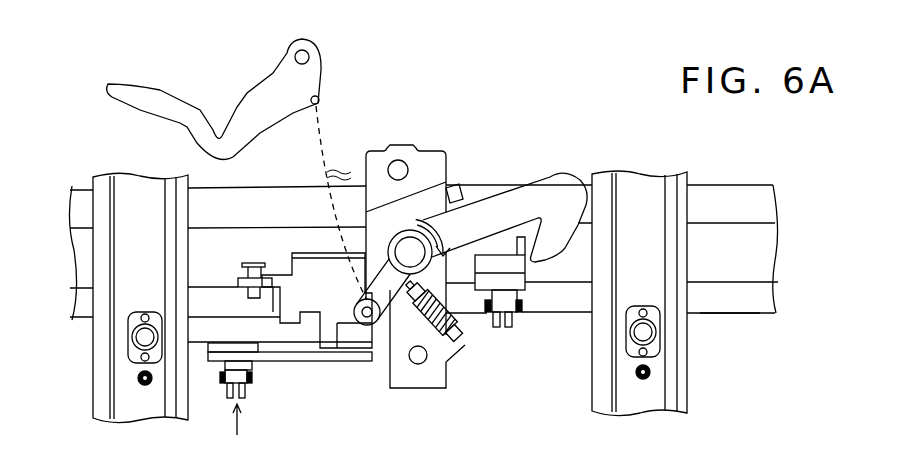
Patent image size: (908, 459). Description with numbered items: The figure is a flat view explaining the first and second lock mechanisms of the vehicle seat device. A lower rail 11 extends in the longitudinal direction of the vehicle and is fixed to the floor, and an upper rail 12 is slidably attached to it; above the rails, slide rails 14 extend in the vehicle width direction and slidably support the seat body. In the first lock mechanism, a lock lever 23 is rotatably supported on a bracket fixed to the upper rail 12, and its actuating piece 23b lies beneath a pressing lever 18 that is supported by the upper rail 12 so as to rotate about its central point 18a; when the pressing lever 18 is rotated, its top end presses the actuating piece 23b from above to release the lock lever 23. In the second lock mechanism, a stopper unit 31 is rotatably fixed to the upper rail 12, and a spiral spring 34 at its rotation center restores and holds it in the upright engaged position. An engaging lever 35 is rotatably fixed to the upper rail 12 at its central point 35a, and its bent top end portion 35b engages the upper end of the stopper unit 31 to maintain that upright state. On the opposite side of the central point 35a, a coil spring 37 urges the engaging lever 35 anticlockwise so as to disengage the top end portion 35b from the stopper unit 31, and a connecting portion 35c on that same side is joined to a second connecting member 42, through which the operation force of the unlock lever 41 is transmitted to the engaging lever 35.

The lower rail 11 is at (745, 315).
The upper rail 12 is at (762, 223).
The slide rail 14 is at (91, 176).
The pressing lever 18 is at (276, 368).
The central point 18a is at (238, 430).
The lock lever 23 is at (290, 262).
The actuating piece 23b is at (320, 330).
The stopper unit 31 is at (470, 262).
The spiral spring 34 is at (520, 312).
The engaging lever 35 is at (527, 180).
The central point 35a is at (385, 265).
The top end portion 35b is at (567, 238).
The connecting portion 35c is at (375, 327).
The coil spring 37 is at (460, 322).
The unlock lever 41 is at (280, 63).
The second connecting member 42 is at (348, 180).